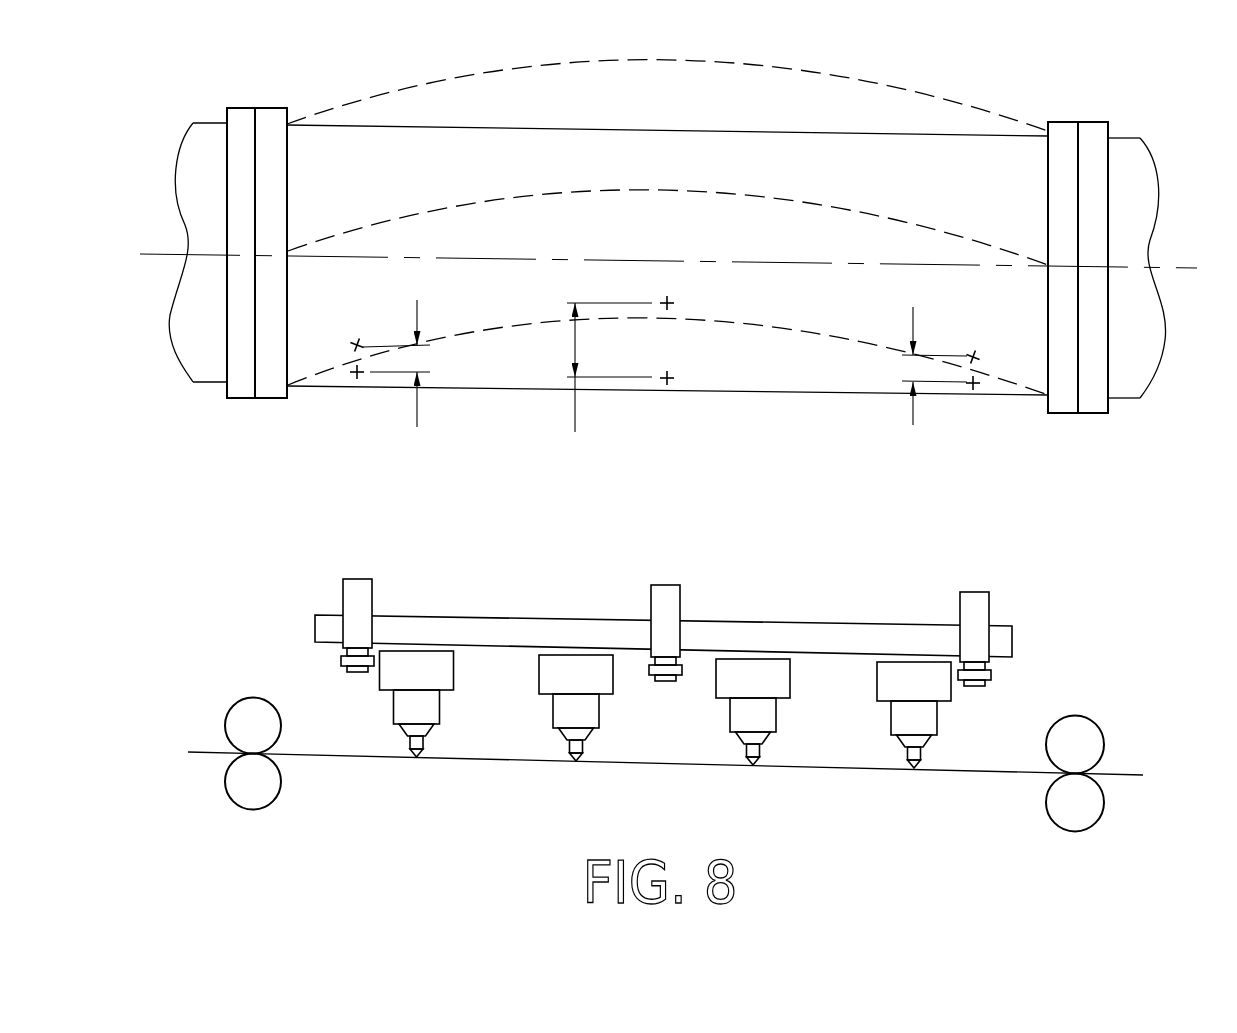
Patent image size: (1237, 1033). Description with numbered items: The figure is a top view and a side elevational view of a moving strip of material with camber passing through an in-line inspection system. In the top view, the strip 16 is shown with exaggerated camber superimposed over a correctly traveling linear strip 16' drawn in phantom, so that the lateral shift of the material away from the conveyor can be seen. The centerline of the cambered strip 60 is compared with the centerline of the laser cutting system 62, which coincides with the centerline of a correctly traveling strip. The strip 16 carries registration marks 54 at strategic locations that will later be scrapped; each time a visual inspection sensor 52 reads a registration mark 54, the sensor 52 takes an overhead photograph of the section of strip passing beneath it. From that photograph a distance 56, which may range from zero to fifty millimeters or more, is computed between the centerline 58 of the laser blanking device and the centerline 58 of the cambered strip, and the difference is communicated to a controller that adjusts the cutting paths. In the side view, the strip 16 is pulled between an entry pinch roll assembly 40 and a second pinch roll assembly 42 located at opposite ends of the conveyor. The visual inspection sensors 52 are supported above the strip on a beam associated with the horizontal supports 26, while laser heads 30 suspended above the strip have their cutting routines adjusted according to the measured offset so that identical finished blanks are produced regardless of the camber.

The strip 16 is at (665, 426).
The correctly traveling linear strip 16' is at (667, 228).
The horizontal supports 26 is at (770, 637).
The laser head 30 is at (403, 742).
The entry pinch roll assembly 40 is at (240, 403).
The second pinch roll assembly 42 is at (1093, 416).
The visual inspection sensor 52 is at (360, 577).
The registration mark 54 is at (350, 370).
The distance 56 is at (417, 427).
The centerline 58 is at (388, 373).
The centerline of the cambered strip 60 is at (657, 190).
The centerline of the laser cutting system 62 is at (655, 260).